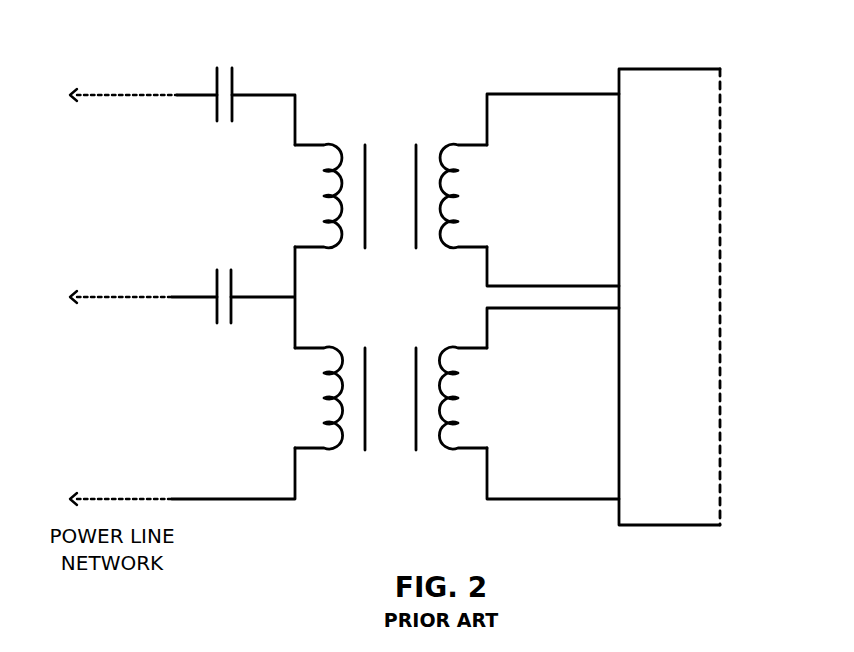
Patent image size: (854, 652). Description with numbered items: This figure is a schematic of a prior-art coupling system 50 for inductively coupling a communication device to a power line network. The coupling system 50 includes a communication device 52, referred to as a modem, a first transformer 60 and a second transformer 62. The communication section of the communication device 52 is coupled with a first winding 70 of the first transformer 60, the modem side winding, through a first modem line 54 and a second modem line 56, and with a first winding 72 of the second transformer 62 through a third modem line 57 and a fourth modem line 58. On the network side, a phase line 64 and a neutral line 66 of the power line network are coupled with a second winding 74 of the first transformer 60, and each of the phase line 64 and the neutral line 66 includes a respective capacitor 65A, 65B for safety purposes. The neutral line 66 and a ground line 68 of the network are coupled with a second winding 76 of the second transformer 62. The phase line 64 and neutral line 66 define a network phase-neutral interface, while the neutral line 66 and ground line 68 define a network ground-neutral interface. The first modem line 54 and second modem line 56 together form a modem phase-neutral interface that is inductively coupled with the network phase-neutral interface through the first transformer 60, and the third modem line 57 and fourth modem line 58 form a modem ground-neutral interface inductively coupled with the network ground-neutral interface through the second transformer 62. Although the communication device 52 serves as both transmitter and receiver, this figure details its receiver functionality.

The coupling system 50 is at (455, 64).
The communication device 52 is at (679, 68).
The first modem line 54 is at (517, 92).
The second modem line 56 is at (523, 285).
The third modem line 57 is at (524, 309).
The fourth modem line 58 is at (504, 498).
The first transformer 60 is at (390, 112).
The second transformer 62 is at (392, 477).
The phase line 64 is at (270, 93).
The capacitor 65A is at (216, 105).
The capacitor 65B is at (215, 281).
The neutral line 66 is at (278, 294).
The ground line 68 is at (277, 497).
The first winding 70 is at (442, 182).
The first winding 72 is at (442, 386).
The second winding 74 is at (340, 208).
The second winding 76 is at (340, 418).